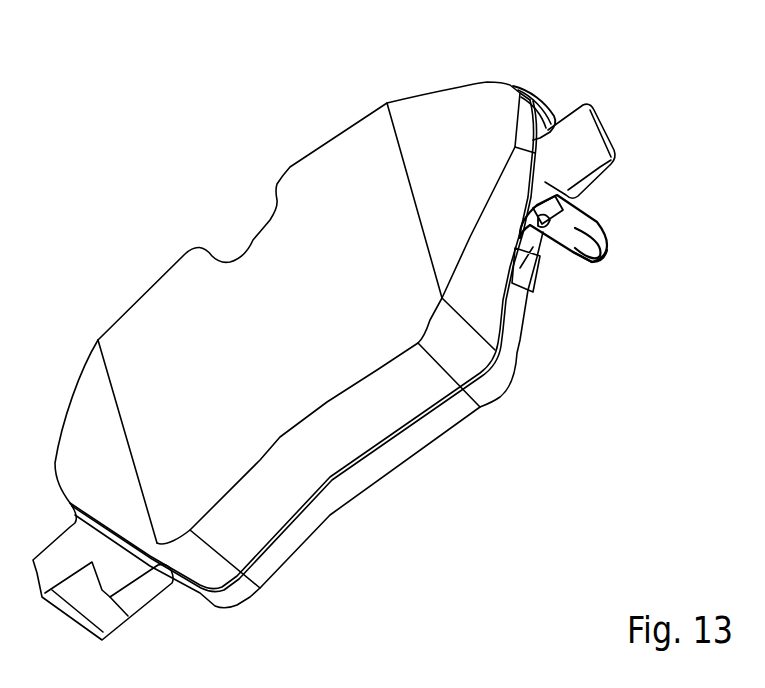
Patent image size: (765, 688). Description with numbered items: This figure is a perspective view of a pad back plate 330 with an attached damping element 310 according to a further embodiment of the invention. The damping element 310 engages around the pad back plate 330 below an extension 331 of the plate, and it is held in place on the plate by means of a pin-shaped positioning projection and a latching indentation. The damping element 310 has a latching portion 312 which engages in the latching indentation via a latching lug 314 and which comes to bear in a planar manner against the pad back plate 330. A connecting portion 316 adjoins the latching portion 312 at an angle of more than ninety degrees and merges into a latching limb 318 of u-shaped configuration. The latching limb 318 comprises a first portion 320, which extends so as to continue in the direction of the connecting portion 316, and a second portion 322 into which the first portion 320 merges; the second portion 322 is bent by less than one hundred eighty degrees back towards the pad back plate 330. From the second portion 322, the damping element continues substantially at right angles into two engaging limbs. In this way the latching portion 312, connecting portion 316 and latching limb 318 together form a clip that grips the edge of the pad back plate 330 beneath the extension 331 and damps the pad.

The damping element 310 is at (606, 194).
The latching portion 312 is at (538, 255).
The latching lug 314 is at (548, 240).
The connecting portion 316 is at (572, 213).
The latching limb 318 is at (613, 257).
The first portion 320 is at (600, 240).
The second portion 322 is at (598, 263).
The pad back plate 330 is at (540, 100).
The extension 331 is at (562, 140).